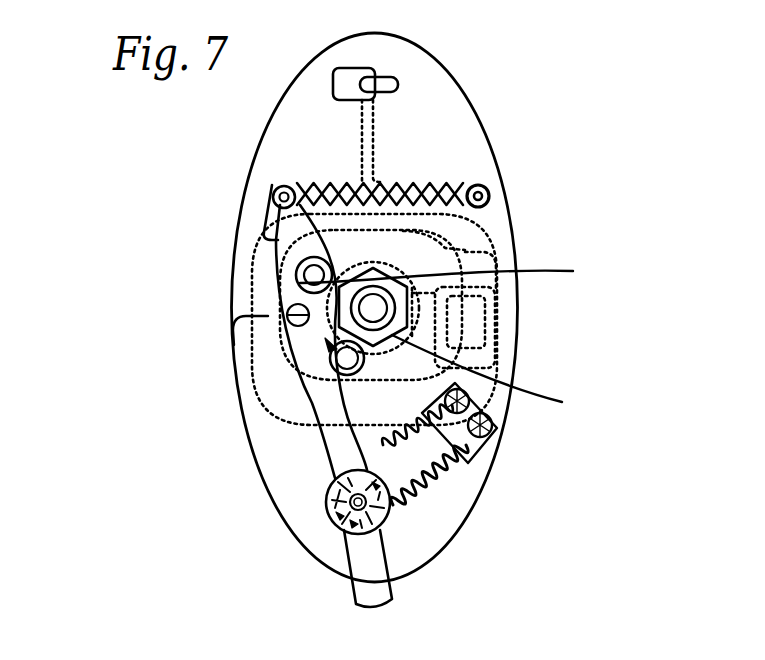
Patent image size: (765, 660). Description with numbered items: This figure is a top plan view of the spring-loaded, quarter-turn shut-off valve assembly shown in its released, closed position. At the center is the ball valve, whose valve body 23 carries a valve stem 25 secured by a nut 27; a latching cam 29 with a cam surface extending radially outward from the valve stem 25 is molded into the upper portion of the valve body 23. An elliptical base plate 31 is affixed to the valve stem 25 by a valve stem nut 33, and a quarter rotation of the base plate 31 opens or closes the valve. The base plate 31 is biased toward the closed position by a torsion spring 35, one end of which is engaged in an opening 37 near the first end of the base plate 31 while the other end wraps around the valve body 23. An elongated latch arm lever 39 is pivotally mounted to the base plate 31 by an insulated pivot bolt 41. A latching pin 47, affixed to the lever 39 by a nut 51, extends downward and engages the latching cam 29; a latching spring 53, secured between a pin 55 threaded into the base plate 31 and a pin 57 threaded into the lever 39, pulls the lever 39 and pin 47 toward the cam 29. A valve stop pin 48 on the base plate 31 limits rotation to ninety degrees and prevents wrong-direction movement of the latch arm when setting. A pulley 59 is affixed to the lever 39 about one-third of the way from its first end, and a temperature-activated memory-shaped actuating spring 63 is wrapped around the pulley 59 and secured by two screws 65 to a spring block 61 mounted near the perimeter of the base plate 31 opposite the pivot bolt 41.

The valve body 23 is at (505, 241).
The valve stem 25 is at (455, 271).
The nut 27 is at (420, 312).
The latching cam 29 is at (236, 397).
The base plate 31 is at (515, 352).
The valve stem nut 33 is at (497, 377).
The torsion spring 35 is at (262, 338).
The opening 37 is at (372, 72).
The latch arm lever 39 is at (392, 598).
The pivot bolt 41 is at (288, 312).
The latching pin 47 is at (296, 282).
The valve stop pin 48 is at (335, 372).
The nut 51 is at (298, 265).
The latching spring 53 is at (425, 190).
The pin 55 is at (489, 194).
The pin 57 is at (273, 198).
The pulley 59 is at (387, 513).
The spring block 61 is at (440, 433).
The actuating spring 63 is at (424, 480).
The screws 65 is at (469, 394).